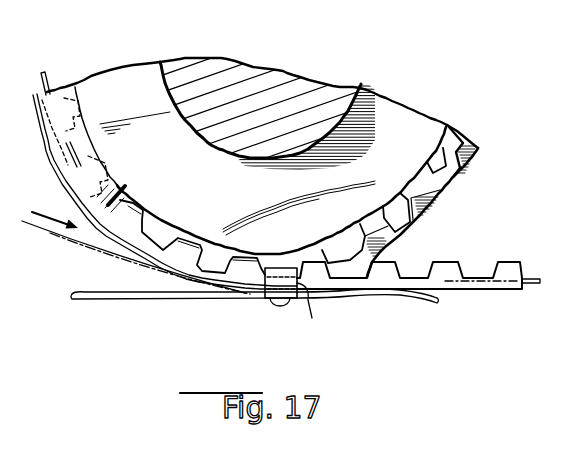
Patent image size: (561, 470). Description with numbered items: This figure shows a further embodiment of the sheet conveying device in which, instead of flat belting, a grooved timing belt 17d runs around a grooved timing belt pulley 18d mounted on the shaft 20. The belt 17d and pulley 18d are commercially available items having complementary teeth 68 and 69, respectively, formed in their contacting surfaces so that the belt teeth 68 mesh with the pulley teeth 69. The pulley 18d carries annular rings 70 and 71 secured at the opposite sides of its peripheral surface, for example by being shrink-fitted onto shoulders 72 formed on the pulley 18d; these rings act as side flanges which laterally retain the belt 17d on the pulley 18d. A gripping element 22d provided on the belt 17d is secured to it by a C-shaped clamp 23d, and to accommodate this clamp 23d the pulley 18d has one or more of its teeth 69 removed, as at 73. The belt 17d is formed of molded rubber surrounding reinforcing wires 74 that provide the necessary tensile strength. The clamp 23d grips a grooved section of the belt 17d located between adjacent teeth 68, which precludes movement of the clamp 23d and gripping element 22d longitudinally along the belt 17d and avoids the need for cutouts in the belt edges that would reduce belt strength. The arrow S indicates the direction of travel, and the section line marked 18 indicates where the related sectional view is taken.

The grooved timing belt 17d is at (442, 276).
The grooved timing belt pulley 18d is at (412, 127).
The shaft 20 is at (338, 95).
The gripping element 22d is at (197, 305).
The C-shaped clamp 23d is at (328, 307).
The belt teeth 68 is at (387, 272).
The pulley teeth 69 is at (436, 228).
The annular ring 70 is at (452, 183).
The annular ring 71 is at (82, 190).
The shoulder 72 is at (461, 142).
The removed tooth location 73 is at (300, 264).
The reinforcing wires 74 is at (46, 92).
The direction of travel S is at (78, 250).
The section line 18- 18 is at (232, 191).